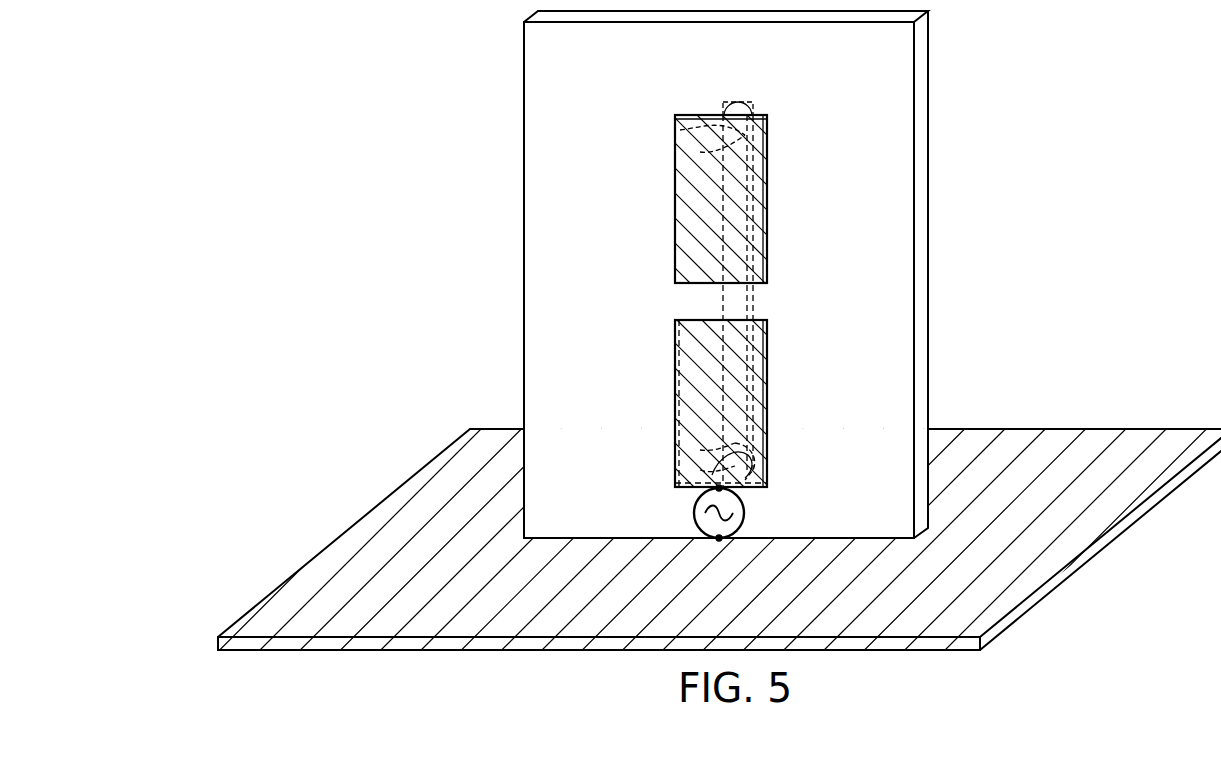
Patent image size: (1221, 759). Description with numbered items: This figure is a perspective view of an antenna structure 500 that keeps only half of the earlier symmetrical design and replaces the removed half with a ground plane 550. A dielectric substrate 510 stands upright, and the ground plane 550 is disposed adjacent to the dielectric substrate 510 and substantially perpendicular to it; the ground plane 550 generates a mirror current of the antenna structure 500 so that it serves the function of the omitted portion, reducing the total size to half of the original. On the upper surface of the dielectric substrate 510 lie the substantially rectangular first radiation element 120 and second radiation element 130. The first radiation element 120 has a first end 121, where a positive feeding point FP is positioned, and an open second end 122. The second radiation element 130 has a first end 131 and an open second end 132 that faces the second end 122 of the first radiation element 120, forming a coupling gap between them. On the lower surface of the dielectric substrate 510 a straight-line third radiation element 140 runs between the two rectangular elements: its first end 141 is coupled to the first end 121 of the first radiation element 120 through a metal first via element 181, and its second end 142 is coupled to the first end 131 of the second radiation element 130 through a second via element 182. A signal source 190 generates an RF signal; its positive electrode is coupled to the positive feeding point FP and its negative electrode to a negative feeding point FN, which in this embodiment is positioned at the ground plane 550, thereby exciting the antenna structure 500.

The antenna structure 500 is at (263, 36).
The dielectric substrate 510 is at (921, 43).
The ground plane 550 is at (1133, 445).
The first radiation element 120 is at (700, 404).
The first end of first radiation element 121 is at (747, 480).
The second end of first radiation element 122 is at (713, 318).
The second radiation element 130 is at (688, 206).
The first end of second radiation element 131 is at (748, 133).
The second end of second radiation element 132 is at (700, 283).
The third radiation element 140 is at (733, 300).
The first end of third radiation element 141 is at (700, 450).
The second end of third radiation element 142 is at (700, 152).
The first via element 181 is at (700, 470).
The second via element 182 is at (678, 124).
The signal source 190 is at (745, 513).
The positive feeding point FP is at (702, 496).
The negative feeding point FN is at (702, 531).